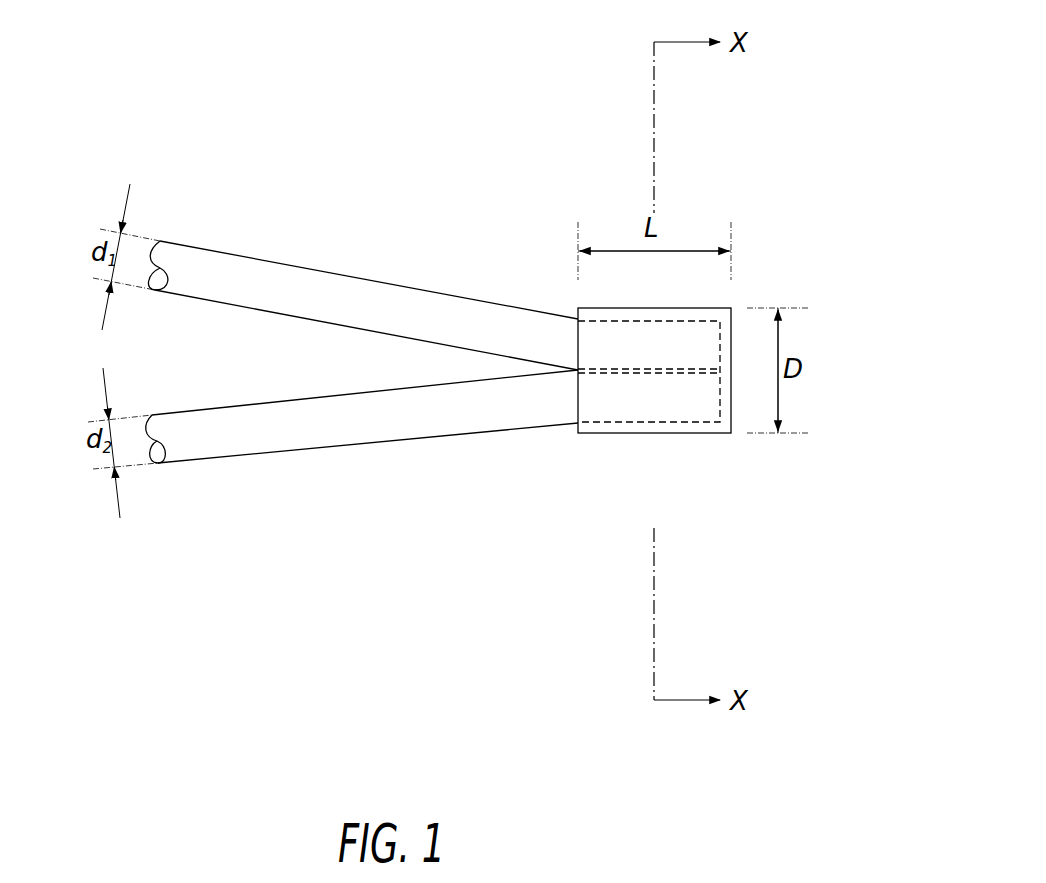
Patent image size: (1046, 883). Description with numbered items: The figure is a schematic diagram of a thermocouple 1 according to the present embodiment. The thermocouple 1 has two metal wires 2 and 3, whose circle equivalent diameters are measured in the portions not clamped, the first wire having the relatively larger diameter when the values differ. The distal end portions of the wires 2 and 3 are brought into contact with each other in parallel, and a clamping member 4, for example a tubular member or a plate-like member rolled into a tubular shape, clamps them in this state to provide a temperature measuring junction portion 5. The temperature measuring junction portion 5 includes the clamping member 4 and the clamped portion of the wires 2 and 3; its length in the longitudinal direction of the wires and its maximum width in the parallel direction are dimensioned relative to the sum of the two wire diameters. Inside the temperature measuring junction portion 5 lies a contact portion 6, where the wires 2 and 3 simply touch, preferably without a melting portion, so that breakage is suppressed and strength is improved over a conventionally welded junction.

The thermocouple 1 is at (402, 112).
The wire 2 is at (315, 268).
The wire 3 is at (330, 448).
The clamping member 4 is at (590, 433).
The temperature measuring junction portion 5 is at (705, 442).
The contact portion 6 is at (608, 368).